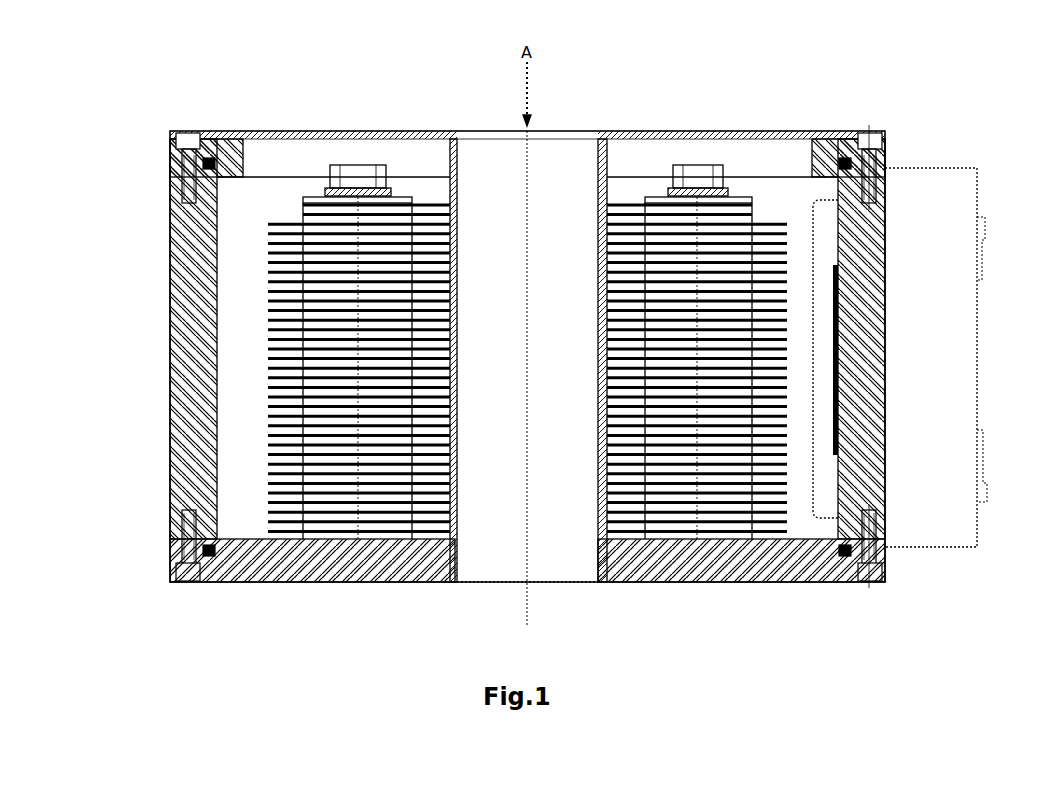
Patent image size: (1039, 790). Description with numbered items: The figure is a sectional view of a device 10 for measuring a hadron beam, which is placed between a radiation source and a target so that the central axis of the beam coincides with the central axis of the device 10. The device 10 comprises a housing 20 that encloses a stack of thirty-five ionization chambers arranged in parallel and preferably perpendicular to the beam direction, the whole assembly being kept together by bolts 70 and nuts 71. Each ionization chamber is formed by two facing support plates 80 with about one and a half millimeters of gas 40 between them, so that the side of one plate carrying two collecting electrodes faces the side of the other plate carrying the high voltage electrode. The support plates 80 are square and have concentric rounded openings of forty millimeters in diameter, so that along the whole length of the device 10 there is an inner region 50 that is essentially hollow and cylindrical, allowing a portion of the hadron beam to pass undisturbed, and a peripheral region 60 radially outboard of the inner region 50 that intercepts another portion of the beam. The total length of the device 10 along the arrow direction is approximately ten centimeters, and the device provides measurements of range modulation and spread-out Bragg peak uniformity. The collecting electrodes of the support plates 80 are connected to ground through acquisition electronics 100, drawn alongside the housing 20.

The device 10 is at (150, 122).
The housing 20 is at (360, 586).
The gas 40 is at (425, 430).
The inner region 50 is at (553, 540).
The peripheral region 60 is at (270, 385).
The bolts 70 is at (697, 168).
The nuts 71 is at (707, 172).
The support plates 80 is at (443, 238).
The acquisition electronics 100 is at (937, 547).